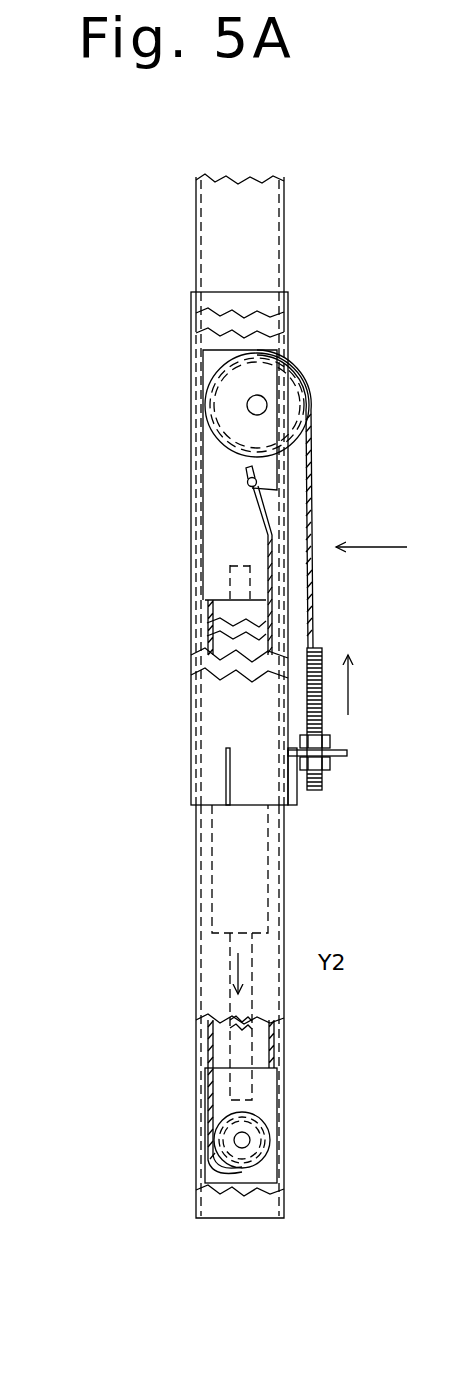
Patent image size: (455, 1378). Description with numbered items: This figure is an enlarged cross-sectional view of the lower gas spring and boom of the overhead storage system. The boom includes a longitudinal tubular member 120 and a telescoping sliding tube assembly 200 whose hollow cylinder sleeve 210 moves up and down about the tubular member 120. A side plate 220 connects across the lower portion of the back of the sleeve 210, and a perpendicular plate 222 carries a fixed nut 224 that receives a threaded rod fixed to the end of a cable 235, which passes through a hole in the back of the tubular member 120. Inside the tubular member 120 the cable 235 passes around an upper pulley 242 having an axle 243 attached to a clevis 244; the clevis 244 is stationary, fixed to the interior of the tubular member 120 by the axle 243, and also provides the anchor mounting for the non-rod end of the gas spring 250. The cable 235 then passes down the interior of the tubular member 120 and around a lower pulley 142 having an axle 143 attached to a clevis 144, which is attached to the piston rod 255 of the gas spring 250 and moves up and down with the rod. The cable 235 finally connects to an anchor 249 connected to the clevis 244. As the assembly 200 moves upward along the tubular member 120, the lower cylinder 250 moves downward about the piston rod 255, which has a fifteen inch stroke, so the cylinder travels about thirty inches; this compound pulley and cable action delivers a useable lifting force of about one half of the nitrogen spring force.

The tubular member 120 is at (190, 205).
The telescoping sliding tube assembly 200 is at (171, 515).
The hollow cylinder sleeve 210 is at (190, 335).
The upper pulley 242 is at (298, 383).
The axle 243 is at (255, 404).
The clevis 244 is at (222, 350).
The anchor 249 is at (256, 480).
The cable 235 is at (309, 520).
The lower gas spring cylinder 250 is at (250, 892).
The piston rod 255 is at (245, 975).
The perpendicular plate 222 is at (347, 748).
The fixed nut 224 is at (330, 764).
The side plate 220 is at (297, 800).
The lower pulley 142 is at (247, 1123).
The axle 143 is at (250, 1148).
The clevis 144 is at (222, 1097).